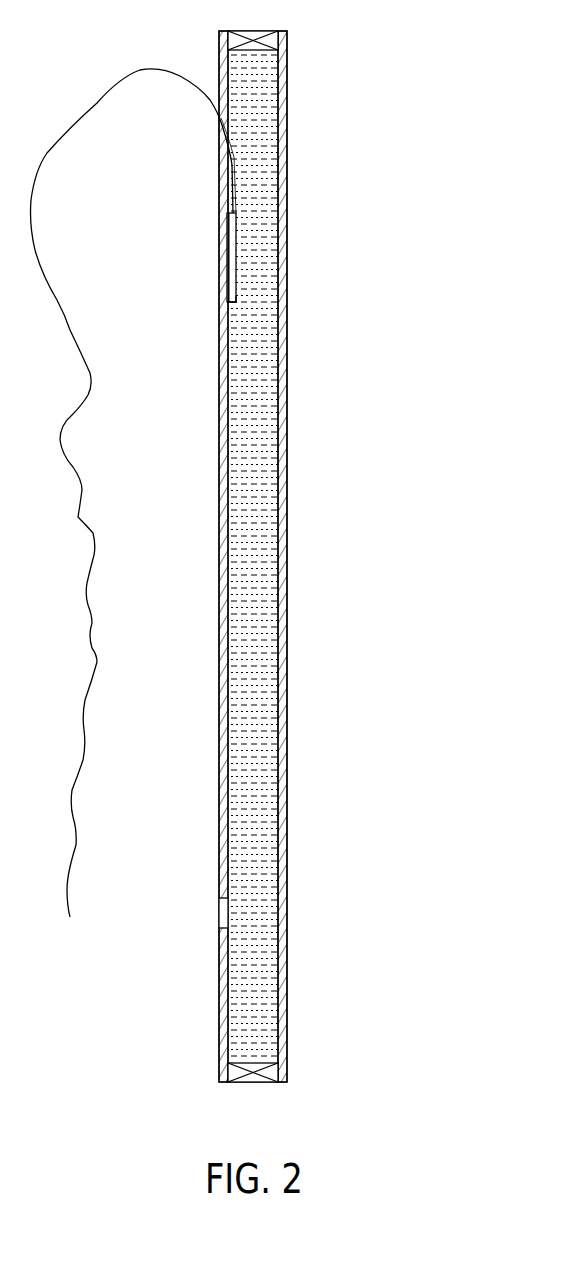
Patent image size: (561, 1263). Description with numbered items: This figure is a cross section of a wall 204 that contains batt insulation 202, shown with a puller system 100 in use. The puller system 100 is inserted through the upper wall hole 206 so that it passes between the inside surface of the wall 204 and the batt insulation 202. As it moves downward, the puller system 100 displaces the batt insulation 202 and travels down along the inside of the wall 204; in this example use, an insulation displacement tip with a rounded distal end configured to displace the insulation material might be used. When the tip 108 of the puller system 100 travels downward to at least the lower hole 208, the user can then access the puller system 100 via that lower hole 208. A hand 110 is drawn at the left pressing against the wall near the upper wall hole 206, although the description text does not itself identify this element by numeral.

The puller system 100 is at (231, 251).
The tip 108 is at (231, 303).
The hand 110 is at (98, 102).
The batt insulation 202 is at (258, 460).
The wall 204 is at (220, 557).
The upper wall hole 206 is at (203, 73).
The lower hole 208 is at (211, 914).